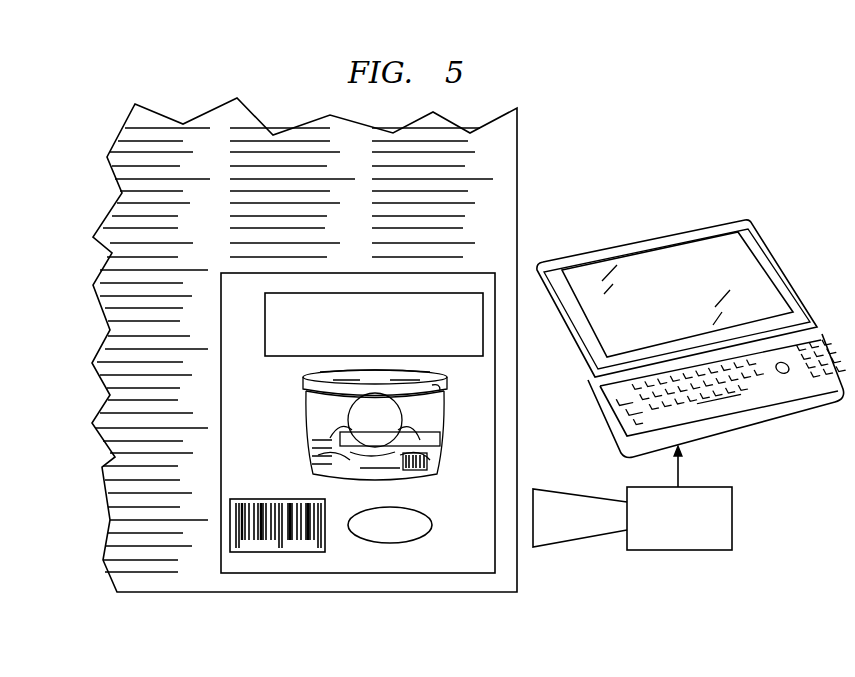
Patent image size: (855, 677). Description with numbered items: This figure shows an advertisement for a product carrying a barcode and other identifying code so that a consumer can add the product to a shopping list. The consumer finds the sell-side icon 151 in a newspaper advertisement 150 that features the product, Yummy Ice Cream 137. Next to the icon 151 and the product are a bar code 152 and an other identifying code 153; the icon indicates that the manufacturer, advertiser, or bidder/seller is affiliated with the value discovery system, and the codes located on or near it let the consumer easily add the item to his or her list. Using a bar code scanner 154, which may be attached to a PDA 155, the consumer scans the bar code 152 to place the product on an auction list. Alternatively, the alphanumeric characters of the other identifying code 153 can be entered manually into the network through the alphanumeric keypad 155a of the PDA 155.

The Yummy Ice Cream 137 is at (307, 403).
The newspaper advertisement 150 is at (482, 417).
The icon 151 is at (388, 543).
The bar code 152 is at (272, 502).
The other identifying code 153 is at (295, 552).
The bar code scanner 154 is at (678, 550).
The PDA 155 is at (693, 316).
The alphanumeric keypad 155a is at (752, 383).